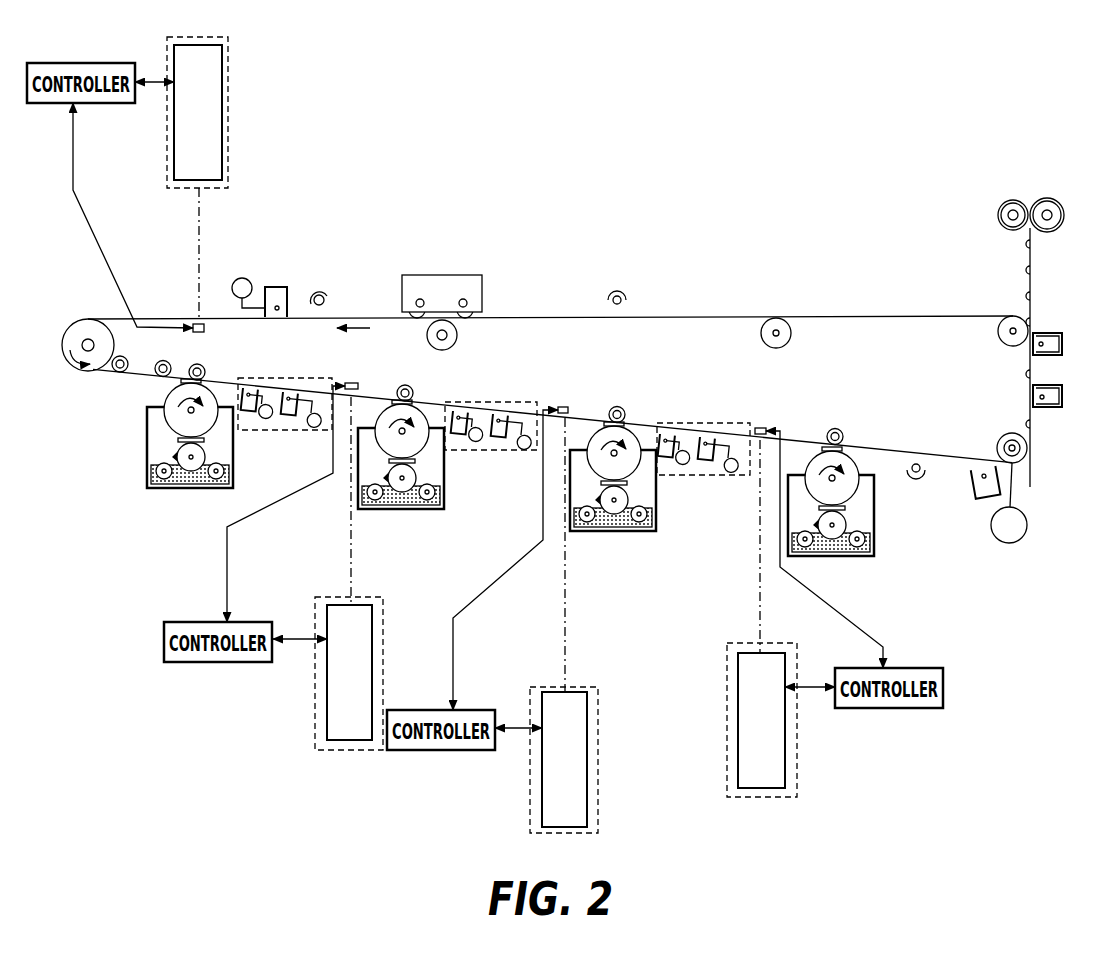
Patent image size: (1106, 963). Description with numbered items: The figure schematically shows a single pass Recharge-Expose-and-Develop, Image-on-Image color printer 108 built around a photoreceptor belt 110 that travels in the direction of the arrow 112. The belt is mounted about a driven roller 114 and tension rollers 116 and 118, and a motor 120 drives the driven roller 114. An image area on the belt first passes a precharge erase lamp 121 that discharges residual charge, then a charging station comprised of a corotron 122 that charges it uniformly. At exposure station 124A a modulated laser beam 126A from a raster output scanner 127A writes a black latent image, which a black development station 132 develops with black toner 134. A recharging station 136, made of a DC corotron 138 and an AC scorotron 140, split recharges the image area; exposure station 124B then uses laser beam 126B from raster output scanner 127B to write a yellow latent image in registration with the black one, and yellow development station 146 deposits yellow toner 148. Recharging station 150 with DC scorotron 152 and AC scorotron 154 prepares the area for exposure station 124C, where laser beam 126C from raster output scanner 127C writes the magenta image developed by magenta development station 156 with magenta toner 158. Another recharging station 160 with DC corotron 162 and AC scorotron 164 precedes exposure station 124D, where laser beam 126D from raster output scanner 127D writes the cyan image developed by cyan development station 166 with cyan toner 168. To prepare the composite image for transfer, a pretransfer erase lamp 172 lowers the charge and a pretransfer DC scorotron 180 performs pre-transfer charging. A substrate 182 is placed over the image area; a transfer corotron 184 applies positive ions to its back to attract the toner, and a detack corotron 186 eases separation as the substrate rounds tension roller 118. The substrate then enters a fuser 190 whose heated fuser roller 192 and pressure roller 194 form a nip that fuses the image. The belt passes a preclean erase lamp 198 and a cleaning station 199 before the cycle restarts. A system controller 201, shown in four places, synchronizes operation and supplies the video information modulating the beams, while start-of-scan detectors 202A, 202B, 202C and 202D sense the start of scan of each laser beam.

The color printer 108 is at (784, 84).
The photoreceptor belt 110 is at (738, 316).
The arrow 112 is at (367, 327).
The driven roller 114 is at (1030, 453).
The tension roller 116 is at (70, 328).
The tension roller 118 is at (1004, 318).
The motor 120 is at (1026, 536).
The precharge erase lamp 121 is at (322, 294).
The corotron 122 is at (277, 287).
The exposure station 124A is at (317, 49).
The exposure station 124B is at (469, 589).
The exposure station 124C is at (661, 671).
The exposure station 124D is at (720, 657).
The laser beam 126A is at (201, 228).
The laser beam 126B is at (348, 563).
The laser beam 126C is at (563, 620).
The laser beam 126D is at (758, 592).
The raster output scanner 127A is at (222, 115).
The raster output scanner 127B is at (375, 672).
The raster output scanner 127C is at (584, 767).
The raster output scanner 127D is at (738, 726).
The black development station 132 is at (191, 488).
The black toner 134 is at (179, 482).
The recharging station 136 is at (283, 378).
The DC corotron 138 is at (249, 389).
The AC scorotron 140 is at (291, 431).
The yellow development station 146 is at (401, 507).
The yellow toner 148 is at (385, 506).
The recharging station 150 is at (493, 402).
The DC scorotron 152 is at (458, 410).
The AC scorotron 154 is at (505, 422).
The magenta development station 156 is at (616, 532).
The magenta toner 158 is at (604, 527).
The recharging station 160 is at (700, 423).
The DC corotron 162 is at (665, 435).
The AC scorotron 164 is at (718, 438).
The cyan development station 166 is at (862, 556).
The cyan toner 168 is at (822, 550).
The pretransfer erase lamp 172 is at (916, 482).
The pretransfer DC scorotron 180 is at (985, 498).
The substrate 182 is at (1031, 471).
The transfer corotron 184 is at (1047, 408).
The detack corotron 186 is at (1055, 333).
The fuser 190 is at (1005, 190).
The heated fuser roller 192 is at (999, 211).
The pressure roller 194 is at (1048, 199).
The preclean erase lamp 198 is at (621, 289).
The cleaning station 199 is at (431, 278).
The system controller 201 is at (43, 63).
The start-of-scan detector 202A is at (206, 329).
The start-of-scan detector 202B is at (352, 384).
The start-of-scan detector 202C is at (569, 408).
The start-of-scan detector 202D is at (776, 429).